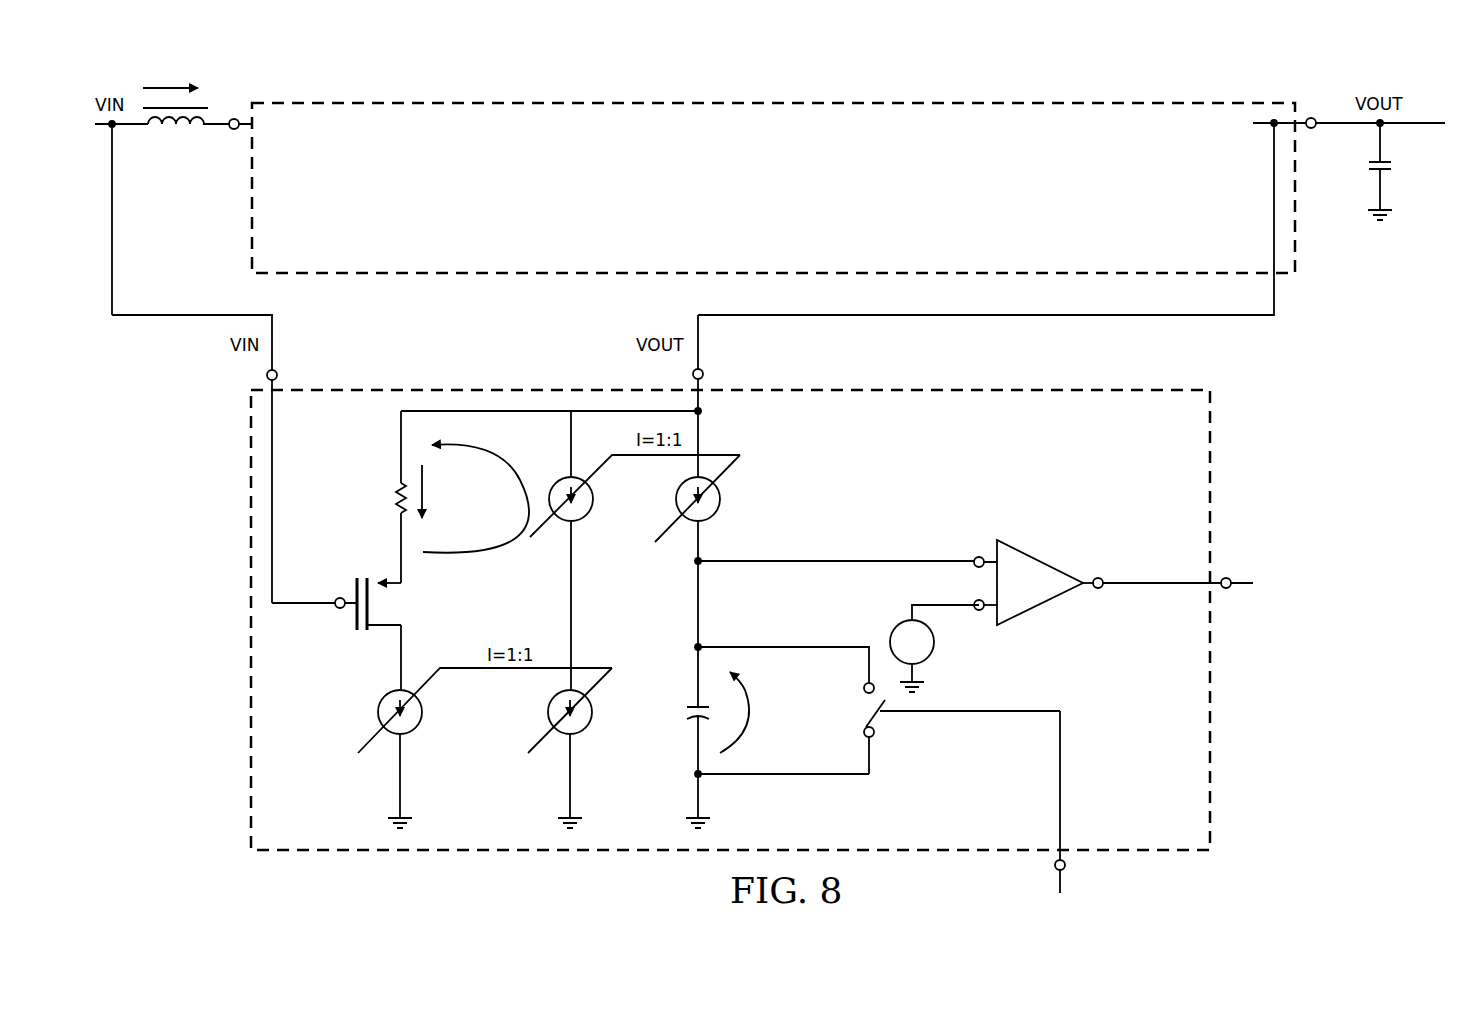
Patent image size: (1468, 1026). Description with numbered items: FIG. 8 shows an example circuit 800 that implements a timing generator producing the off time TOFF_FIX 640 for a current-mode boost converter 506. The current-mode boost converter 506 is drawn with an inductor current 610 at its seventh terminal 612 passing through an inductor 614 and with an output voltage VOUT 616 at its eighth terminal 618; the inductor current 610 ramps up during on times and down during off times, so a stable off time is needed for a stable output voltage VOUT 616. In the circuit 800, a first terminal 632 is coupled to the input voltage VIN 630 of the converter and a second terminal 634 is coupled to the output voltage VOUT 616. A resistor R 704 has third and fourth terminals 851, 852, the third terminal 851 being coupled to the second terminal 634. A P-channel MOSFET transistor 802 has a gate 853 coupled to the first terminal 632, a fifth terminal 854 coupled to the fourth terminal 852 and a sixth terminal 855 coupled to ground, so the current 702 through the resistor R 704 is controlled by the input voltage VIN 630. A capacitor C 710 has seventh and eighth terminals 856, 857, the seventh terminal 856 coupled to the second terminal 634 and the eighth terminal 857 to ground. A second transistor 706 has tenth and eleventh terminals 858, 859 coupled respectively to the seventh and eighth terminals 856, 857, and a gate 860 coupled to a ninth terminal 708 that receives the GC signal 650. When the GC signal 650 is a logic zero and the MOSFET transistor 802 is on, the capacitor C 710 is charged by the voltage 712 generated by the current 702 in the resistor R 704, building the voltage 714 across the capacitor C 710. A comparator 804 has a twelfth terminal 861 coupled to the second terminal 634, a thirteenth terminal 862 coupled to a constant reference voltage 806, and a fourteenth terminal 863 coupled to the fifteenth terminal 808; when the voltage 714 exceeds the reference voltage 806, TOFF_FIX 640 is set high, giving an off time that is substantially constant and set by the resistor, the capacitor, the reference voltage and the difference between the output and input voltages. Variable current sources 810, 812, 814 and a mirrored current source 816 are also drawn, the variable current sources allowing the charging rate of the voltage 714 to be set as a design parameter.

The current-mode boost converter 506 is at (637, 98).
The inductor current 610 is at (170, 87).
The seventh terminal 612 is at (230, 132).
The inductor L1 614 is at (168, 132).
The output voltage VOUT 616 is at (1276, 304).
The eighth terminal 618 is at (1313, 132).
The input voltage VIN 630 is at (274, 347).
The first terminal 632 is at (1390, 164).
The second terminal 634 is at (704, 373).
The off time TOFF_FIX 640 is at (1240, 580).
The GC signal 650 is at (1064, 882).
The current 702 is at (426, 492).
The resistor R 704 is at (396, 498).
The transistor MN1 706 is at (875, 734).
The ninth terminal 708 is at (1055, 867).
The capacitor C 710 is at (687, 710).
The voltage 712 is at (486, 546).
The voltage across the capacitor C 714 is at (752, 718).
The circuit 800 is at (248, 688).
The MOSFET MP1 transistor 802 is at (355, 590).
The comparator 804 is at (1044, 606).
The reference voltage VREF 806 is at (884, 630).
The fifteenth terminal 808 is at (1228, 591).
The variable current source 810 is at (376, 712).
The variable current source 812 is at (546, 712).
The variable current source 814 is at (596, 500).
The mirrored current source 816 is at (723, 500).
The third terminal 851 is at (400, 446).
The fourth terminal 852 is at (398, 538).
The gate 853 is at (339, 610).
The fifth terminal 854 is at (406, 573).
The sixth terminal 855 is at (406, 648).
The seventh terminal 856 is at (696, 652).
The eighth terminal 857 is at (686, 772).
The tenth terminal 858 is at (866, 665).
The eleventh terminal 859 is at (873, 764).
The gate 860 is at (854, 710).
The twelfth terminal 861 is at (976, 554).
The thirteenth terminal 862 is at (978, 612).
The fourteenth terminal 863 is at (1098, 591).